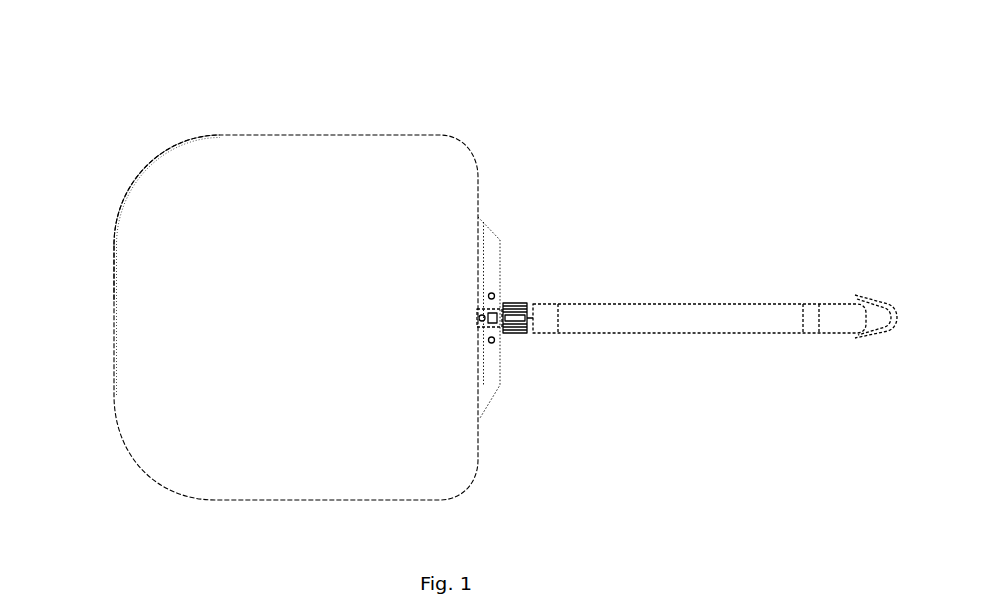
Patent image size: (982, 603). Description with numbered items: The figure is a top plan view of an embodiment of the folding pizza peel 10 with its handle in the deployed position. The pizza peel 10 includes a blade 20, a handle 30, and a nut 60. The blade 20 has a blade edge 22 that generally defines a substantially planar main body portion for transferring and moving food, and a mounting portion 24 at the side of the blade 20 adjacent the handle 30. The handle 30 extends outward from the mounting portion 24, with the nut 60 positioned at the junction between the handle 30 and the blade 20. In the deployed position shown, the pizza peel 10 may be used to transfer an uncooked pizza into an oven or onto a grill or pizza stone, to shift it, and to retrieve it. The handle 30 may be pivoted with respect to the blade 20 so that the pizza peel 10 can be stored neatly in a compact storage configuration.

The folding pizza peel 10 is at (443, 77).
The blade 20 is at (334, 132).
The blade edge 22 is at (113, 268).
The mounting portion 24 is at (500, 385).
The handle 30 is at (706, 291).
The nut 60 is at (519, 299).